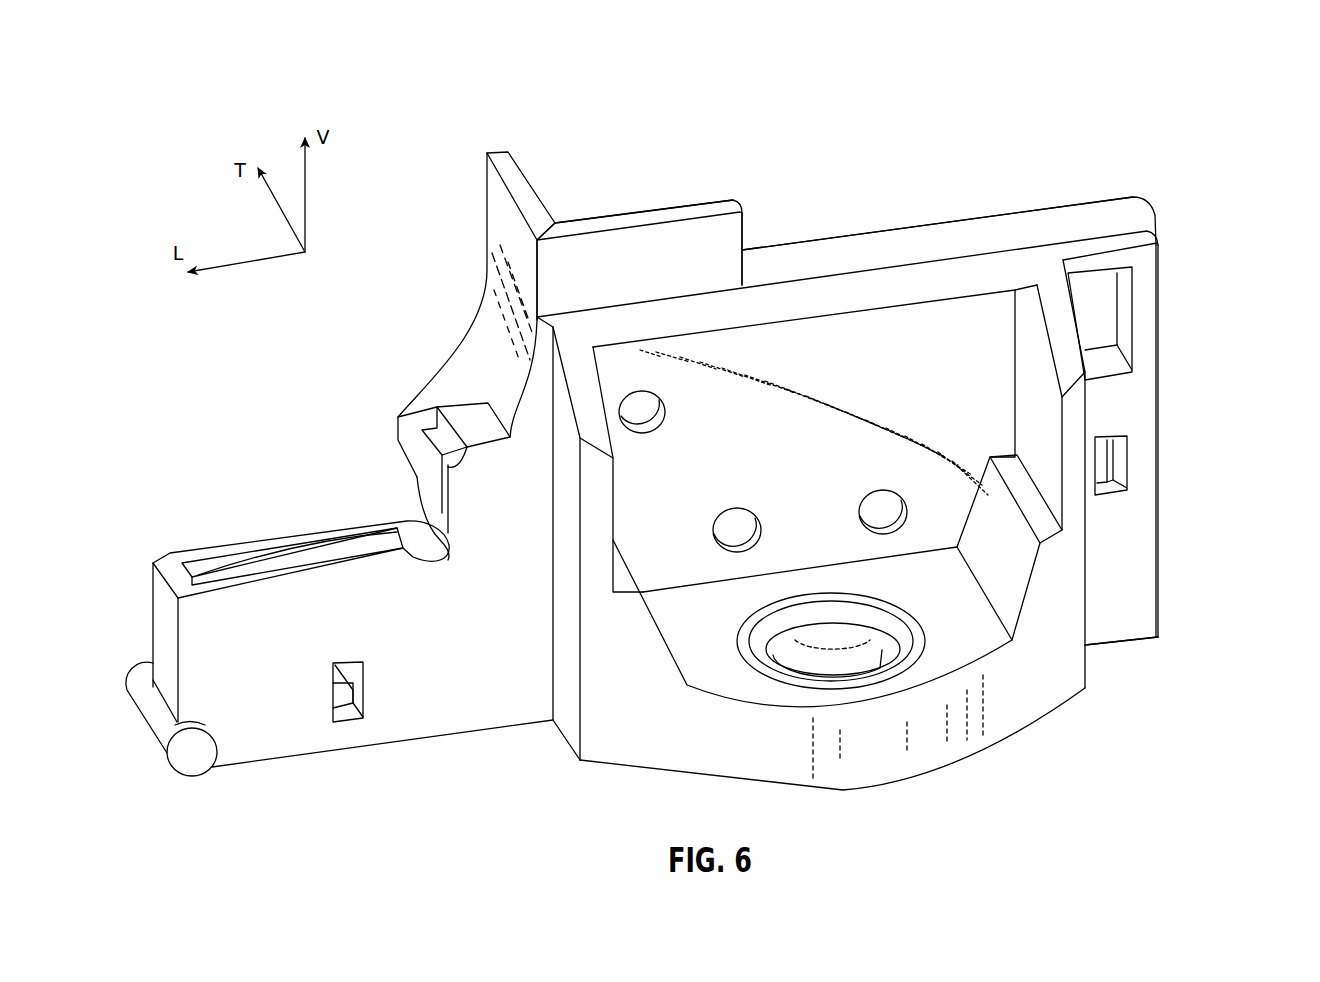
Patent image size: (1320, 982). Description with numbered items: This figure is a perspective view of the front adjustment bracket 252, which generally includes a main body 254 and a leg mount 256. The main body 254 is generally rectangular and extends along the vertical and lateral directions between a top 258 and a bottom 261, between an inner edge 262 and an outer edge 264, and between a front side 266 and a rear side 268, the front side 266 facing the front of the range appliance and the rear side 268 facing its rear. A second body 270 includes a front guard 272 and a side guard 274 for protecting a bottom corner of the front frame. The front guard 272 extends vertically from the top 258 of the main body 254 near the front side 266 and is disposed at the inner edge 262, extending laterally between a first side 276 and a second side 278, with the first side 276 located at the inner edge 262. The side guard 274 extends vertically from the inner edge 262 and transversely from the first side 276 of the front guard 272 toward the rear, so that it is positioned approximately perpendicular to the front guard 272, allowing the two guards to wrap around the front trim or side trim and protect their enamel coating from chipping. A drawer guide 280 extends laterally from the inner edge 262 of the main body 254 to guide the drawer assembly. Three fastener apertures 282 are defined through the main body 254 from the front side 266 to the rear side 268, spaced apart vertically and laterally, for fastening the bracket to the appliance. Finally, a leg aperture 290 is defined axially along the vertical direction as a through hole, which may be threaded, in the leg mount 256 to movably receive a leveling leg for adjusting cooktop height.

The front adjustment bracket 252 is at (898, 150).
The main body 254 is at (978, 382).
The leg mount 256 is at (915, 753).
The top 258 is at (827, 258).
The bottom 261 is at (1108, 648).
The inner edge 262 is at (543, 617).
The outer edge 264 is at (1163, 457).
The front side 266 is at (867, 352).
The rear side 268 is at (1010, 203).
The second body 270 is at (597, 192).
The front guard 272 is at (685, 240).
The side guard 274 is at (510, 185).
The first side 276 is at (542, 282).
The second side 278 is at (745, 227).
The drawer guide 280 is at (257, 702).
The fastener apertures 282 is at (858, 508).
The leg aperture 290 is at (858, 628).